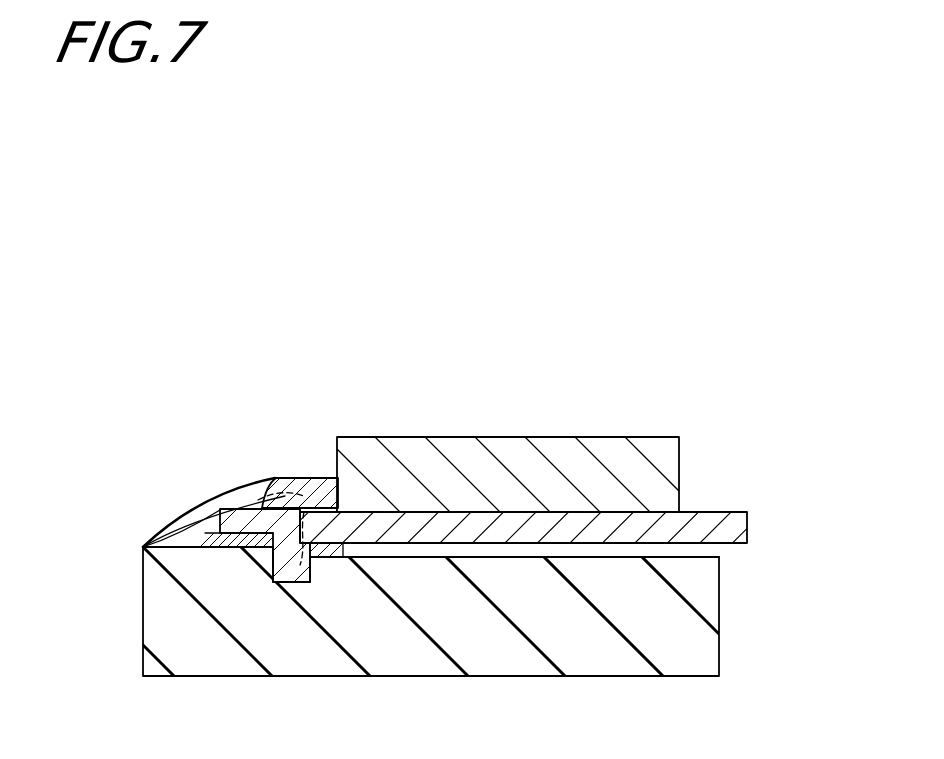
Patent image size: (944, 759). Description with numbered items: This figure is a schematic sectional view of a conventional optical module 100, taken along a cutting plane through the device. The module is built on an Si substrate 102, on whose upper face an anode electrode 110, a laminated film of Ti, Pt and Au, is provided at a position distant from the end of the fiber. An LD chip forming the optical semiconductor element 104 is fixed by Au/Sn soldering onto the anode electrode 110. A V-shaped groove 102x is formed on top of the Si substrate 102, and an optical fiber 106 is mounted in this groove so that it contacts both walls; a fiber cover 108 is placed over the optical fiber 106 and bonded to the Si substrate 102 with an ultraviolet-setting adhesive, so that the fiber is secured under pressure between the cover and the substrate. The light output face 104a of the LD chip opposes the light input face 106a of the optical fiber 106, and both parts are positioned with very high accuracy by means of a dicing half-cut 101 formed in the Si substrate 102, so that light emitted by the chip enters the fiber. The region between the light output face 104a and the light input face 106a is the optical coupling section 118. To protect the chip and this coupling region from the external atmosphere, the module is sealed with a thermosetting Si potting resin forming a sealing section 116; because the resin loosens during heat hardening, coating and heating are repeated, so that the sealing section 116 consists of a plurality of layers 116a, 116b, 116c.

The optical module 100 is at (692, 402).
The dicing half-cut 101 is at (282, 554).
The Si substrate 102 is at (713, 618).
The V-shaped groove 102x is at (634, 519).
The optical semiconductor element 104 is at (262, 513).
The light output face 104a is at (252, 514).
The optical fiber 106 is at (718, 523).
The light input face 106a is at (290, 518).
The fiber cover 108 is at (668, 467).
The anode electrode 110 is at (221, 548).
The sealing section 116 is at (215, 435).
The first layer of sealing section 116a is at (177, 531).
The second layer of sealing section 116b is at (200, 513).
The third layer of sealing section 116c is at (237, 491).
The optical coupling section 118 is at (324, 558).